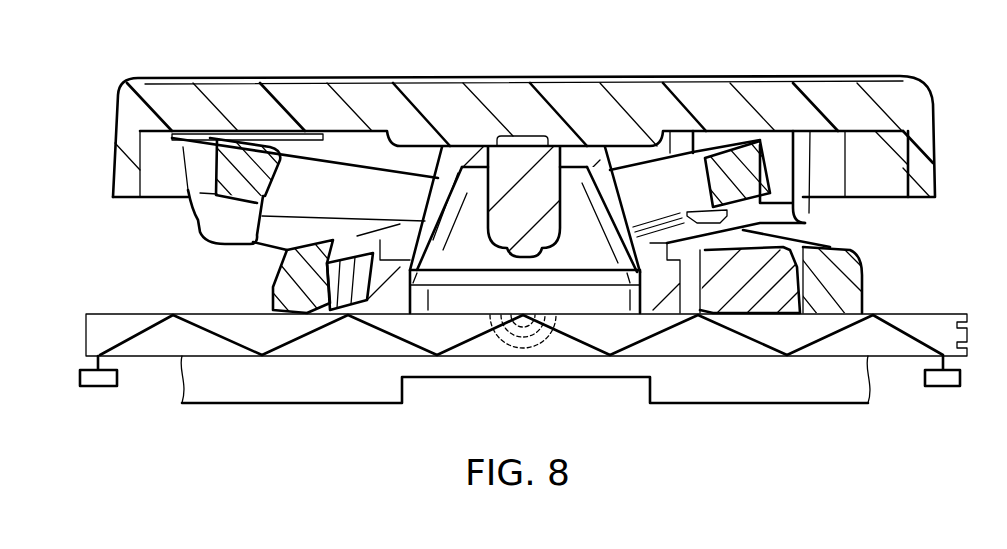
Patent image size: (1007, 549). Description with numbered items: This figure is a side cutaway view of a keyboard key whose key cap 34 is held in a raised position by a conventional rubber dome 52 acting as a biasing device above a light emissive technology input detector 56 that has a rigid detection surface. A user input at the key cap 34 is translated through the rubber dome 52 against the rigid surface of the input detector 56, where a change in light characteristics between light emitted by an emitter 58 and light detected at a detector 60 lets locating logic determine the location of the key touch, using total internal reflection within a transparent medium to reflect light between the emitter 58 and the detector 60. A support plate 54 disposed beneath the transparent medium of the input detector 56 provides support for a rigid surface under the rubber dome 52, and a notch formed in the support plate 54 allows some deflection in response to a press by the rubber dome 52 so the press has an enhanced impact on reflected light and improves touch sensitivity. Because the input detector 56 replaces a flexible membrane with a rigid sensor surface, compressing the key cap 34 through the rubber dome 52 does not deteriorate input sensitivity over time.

The key cap 34 is at (518, 78).
The rubber dome 52 is at (523, 173).
The support plate 54 is at (292, 404).
The light emissive technology input detector 56 is at (86, 336).
The emitter 58 is at (88, 388).
The detector 60 is at (953, 388).